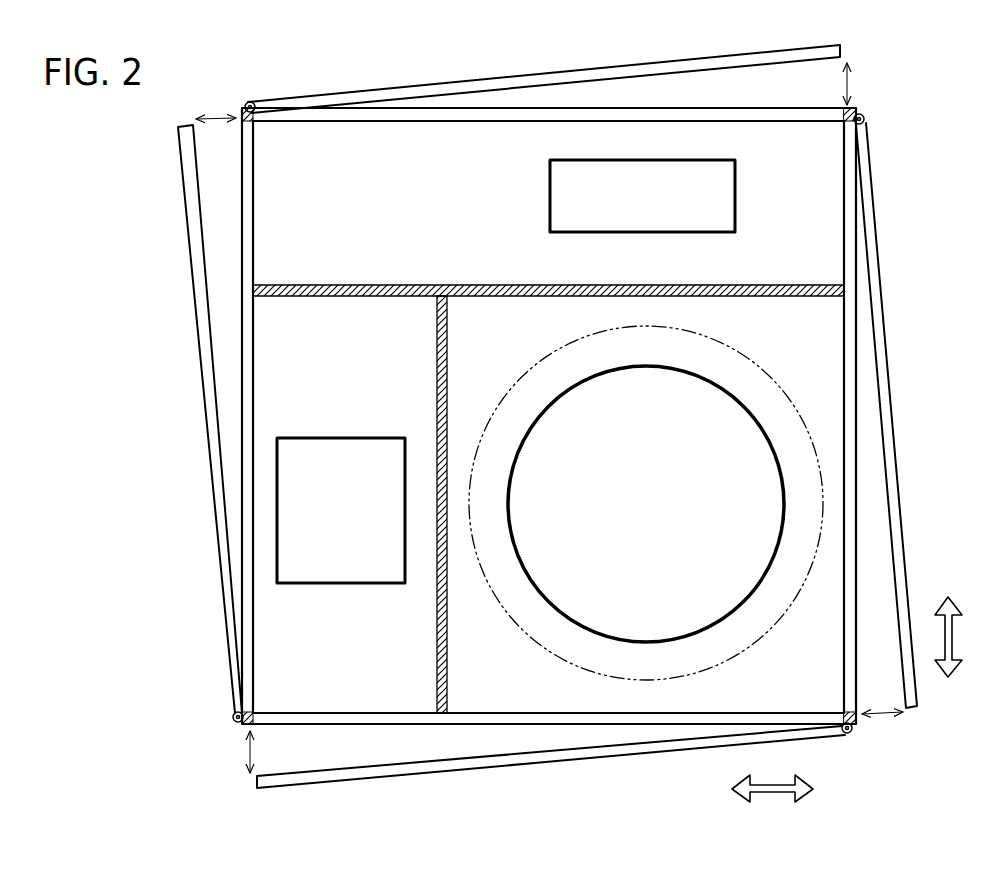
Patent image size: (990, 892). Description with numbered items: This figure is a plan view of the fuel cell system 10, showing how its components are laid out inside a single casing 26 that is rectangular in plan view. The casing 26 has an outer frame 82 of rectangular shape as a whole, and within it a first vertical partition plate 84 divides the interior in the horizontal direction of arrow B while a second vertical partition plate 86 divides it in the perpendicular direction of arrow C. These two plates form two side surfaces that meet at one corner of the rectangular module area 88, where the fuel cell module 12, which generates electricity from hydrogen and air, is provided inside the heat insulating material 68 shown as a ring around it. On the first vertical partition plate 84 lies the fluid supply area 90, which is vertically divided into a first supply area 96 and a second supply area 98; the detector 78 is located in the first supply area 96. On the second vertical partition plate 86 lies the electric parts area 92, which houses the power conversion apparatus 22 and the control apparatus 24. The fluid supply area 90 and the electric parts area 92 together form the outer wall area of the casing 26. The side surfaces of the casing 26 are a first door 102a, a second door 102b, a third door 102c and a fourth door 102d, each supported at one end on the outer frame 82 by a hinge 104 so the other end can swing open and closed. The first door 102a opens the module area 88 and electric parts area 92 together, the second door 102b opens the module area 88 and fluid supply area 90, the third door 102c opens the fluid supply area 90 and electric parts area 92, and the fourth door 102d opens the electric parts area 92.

The fuel cell system 10 is at (83, 132).
The fuel cell module 12 is at (684, 417).
The power conversion apparatus 22 is at (612, 233).
The control apparatus 24 is at (642, 216).
The casing 26 is at (863, 97).
The heat insulating material 68 is at (735, 662).
The detector 78 is at (342, 585).
The outer frame 82 is at (846, 650).
The first vertical partition plate 84 is at (436, 655).
The second vertical partition plate 86 is at (390, 285).
The module area 88 is at (812, 680).
The fluid supply area 90 is at (345, 529).
The electric parts area 92 is at (757, 157).
The first supply area 96 is at (345, 529).
The second supply area 98 is at (301, 697).
The first door 102a is at (890, 384).
The second door 102b is at (575, 759).
The third door 102c is at (208, 448).
The fourth door 102d is at (524, 75).
The hinge 104 is at (249, 101).